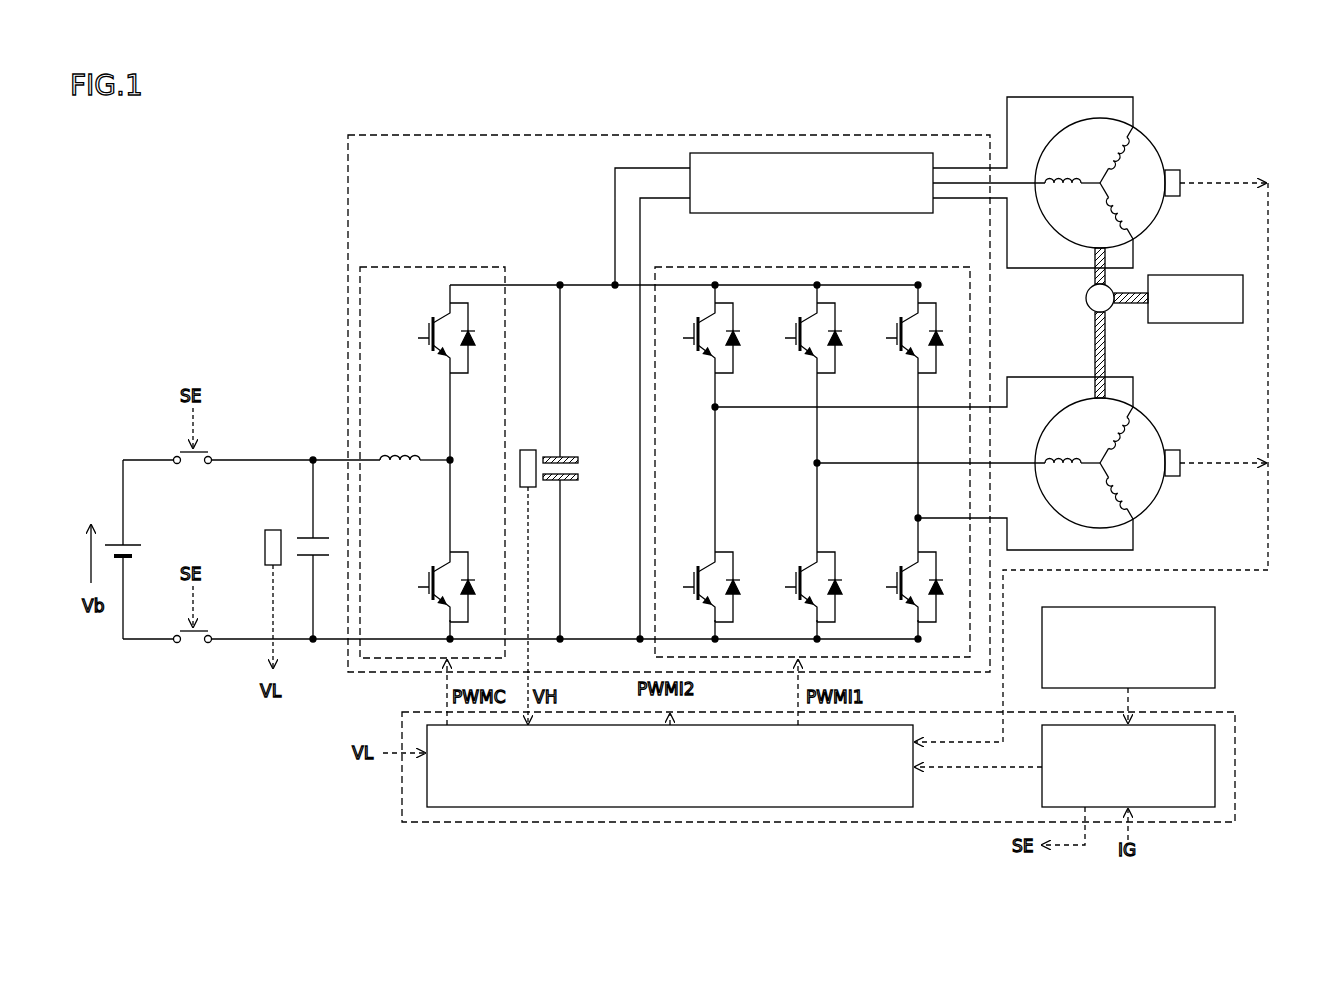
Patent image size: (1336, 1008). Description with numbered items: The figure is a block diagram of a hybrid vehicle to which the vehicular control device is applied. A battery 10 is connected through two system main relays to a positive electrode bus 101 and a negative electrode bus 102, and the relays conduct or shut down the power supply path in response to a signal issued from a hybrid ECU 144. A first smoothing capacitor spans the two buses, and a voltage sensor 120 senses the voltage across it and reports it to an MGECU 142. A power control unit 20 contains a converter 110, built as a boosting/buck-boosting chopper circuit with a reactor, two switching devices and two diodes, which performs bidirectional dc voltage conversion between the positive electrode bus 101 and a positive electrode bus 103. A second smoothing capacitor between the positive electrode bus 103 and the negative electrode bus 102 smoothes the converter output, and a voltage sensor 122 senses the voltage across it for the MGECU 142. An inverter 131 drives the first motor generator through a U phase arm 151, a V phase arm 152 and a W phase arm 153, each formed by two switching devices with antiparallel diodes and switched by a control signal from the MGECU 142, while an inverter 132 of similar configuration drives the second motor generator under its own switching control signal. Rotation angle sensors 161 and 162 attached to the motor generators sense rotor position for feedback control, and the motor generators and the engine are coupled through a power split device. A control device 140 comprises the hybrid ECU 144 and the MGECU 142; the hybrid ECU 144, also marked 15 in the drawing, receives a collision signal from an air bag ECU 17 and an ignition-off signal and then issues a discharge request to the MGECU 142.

The battery 10 is at (118, 543).
The power control unit 20 is at (346, 166).
The positive electrode bus 101 is at (299, 456).
The negative electrode bus 102 is at (596, 641).
The positive electrode bus 103 is at (544, 283).
The converter 110 is at (432, 443).
The voltage sensor 120 is at (273, 530).
The voltage sensor 122 is at (528, 449).
The inverter 131 is at (914, 267).
The inverter 132 is at (818, 214).
The control device 140 is at (1236, 712).
The MG electronic control unit (MGECU) 142 is at (883, 718).
The hybrid ECU 144 is at (1215, 766).
The hybrid ECU 15 is at (1180, 724).
The air bag ECU 17 is at (1180, 607).
The U phase arm 151 is at (700, 419).
The V phase arm 152 is at (801, 475).
The W phase arm 153 is at (904, 530).
The rotation angle sensor 161 is at (1180, 453).
The rotation angle sensor 162 is at (1180, 173).